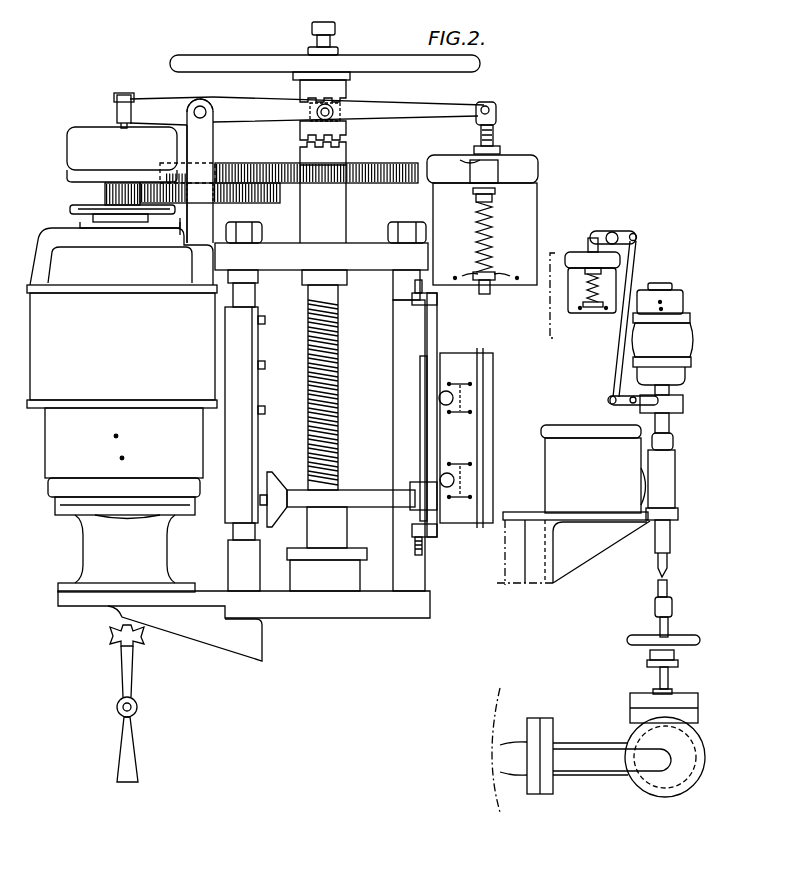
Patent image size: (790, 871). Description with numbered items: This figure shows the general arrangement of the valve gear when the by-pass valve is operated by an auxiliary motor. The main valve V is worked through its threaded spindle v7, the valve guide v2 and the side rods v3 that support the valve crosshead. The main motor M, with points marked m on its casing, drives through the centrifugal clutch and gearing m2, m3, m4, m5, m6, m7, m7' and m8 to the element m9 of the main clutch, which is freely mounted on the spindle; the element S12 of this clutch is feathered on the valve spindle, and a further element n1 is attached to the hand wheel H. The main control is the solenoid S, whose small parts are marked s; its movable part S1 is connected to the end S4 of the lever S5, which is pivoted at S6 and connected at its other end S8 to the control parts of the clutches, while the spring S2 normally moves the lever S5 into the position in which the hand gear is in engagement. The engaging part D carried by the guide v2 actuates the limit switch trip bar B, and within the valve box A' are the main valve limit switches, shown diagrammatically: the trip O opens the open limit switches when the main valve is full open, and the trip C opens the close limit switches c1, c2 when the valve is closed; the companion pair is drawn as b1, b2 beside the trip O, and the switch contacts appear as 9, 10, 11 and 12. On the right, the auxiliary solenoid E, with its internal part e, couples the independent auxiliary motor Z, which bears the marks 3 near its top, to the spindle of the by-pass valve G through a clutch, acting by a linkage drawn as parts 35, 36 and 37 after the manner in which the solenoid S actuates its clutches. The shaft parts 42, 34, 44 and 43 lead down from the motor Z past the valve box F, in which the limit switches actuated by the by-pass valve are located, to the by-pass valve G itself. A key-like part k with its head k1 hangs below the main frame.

The hand wheel H is at (242, 63).
The clutch block n1 is at (347, 88).
The main clutch element S12 is at (348, 128).
The main clutch element m9 is at (347, 153).
The centrifugal clutch and gearing part m8 is at (405, 164).
The gear portion m7' is at (210, 161).
The centrifugal clutch and gearing part m7 is at (213, 204).
The centrifugal clutch and gearing part m6 is at (105, 190).
The centrifugal clutch and gearing part m5 is at (105, 205).
The centrifugal clutch part m4 is at (68, 137).
The centrifugal clutch part m3 is at (67, 176).
The centrifugal clutch part m2 is at (93, 218).
The lever pivot S6 is at (202, 107).
The lever end S8 is at (117, 118).
The lever S5 is at (471, 106).
The lever end S4 is at (496, 108).
The movable part of solenoid S1 is at (535, 172).
The main control solenoid S is at (485, 234).
The spring S2 is at (478, 230).
The contacts s is at (484, 268).
The main motor M is at (122, 410).
The motor terminals m is at (118, 438).
The main valve V is at (385, 648).
The side rods v3 is at (256, 300).
The screw spindle v7 is at (338, 407).
The valve guide v2 is at (286, 492).
The engaging part D is at (410, 511).
The limit switch trip bar B is at (438, 323).
The valve box A' is at (456, 432).
The open limit switch trip O is at (439, 398).
The close limit switch trip C is at (440, 479).
The contact 9 is at (472, 383).
The contact 10 is at (472, 413).
The contact 11 is at (472, 465).
The contact 12 is at (472, 497).
The contact terminal b1 is at (460, 389).
The contact terminal b2 is at (460, 424).
The main valve close limit switch c1 is at (460, 471).
The main valve close limit switch c2 is at (460, 508).
The auxiliary solenoid E is at (574, 292).
The switch spring e is at (607, 310).
The lever 35 is at (628, 226).
The rod 37 is at (623, 343).
The link 36 is at (629, 406).
The cap 3 is at (663, 310).
The auxiliary motor Z is at (662, 349).
The stem 42 is at (669, 390).
The block 34 is at (676, 406).
The coupling 44 is at (652, 481).
The guide block 43 is at (670, 496).
The by-pass valve box F is at (573, 505).
The by-pass valve G is at (692, 753).
The key head k1 is at (135, 640).
The key k is at (132, 690).